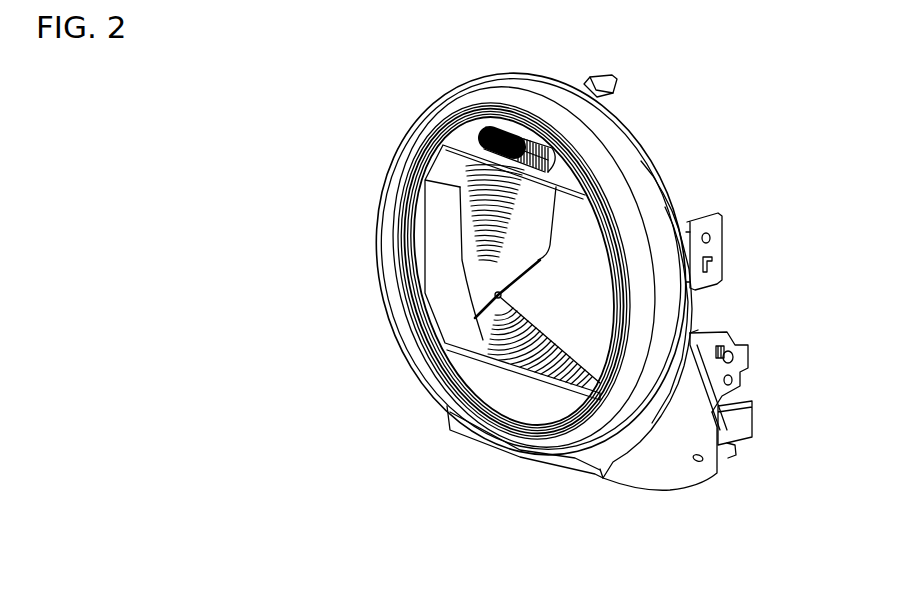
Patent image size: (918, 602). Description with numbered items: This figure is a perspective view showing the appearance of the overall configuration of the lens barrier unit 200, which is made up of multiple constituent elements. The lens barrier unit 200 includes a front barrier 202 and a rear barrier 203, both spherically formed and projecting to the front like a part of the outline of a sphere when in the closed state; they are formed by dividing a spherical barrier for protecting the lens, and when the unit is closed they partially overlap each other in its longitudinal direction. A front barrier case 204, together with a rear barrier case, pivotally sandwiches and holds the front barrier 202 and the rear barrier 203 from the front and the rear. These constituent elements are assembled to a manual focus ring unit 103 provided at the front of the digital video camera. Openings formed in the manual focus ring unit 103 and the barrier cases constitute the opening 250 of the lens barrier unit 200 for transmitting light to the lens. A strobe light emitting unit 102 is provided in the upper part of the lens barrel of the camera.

The strobe light emitting unit 102 is at (480, 130).
The manual focus ring unit 103 is at (620, 166).
The lens barrier unit 200 is at (632, 490).
The front barrier 202 is at (512, 341).
The rear barrier 203 is at (476, 286).
The front barrier case 204 is at (683, 468).
The opening 250 is at (447, 221).